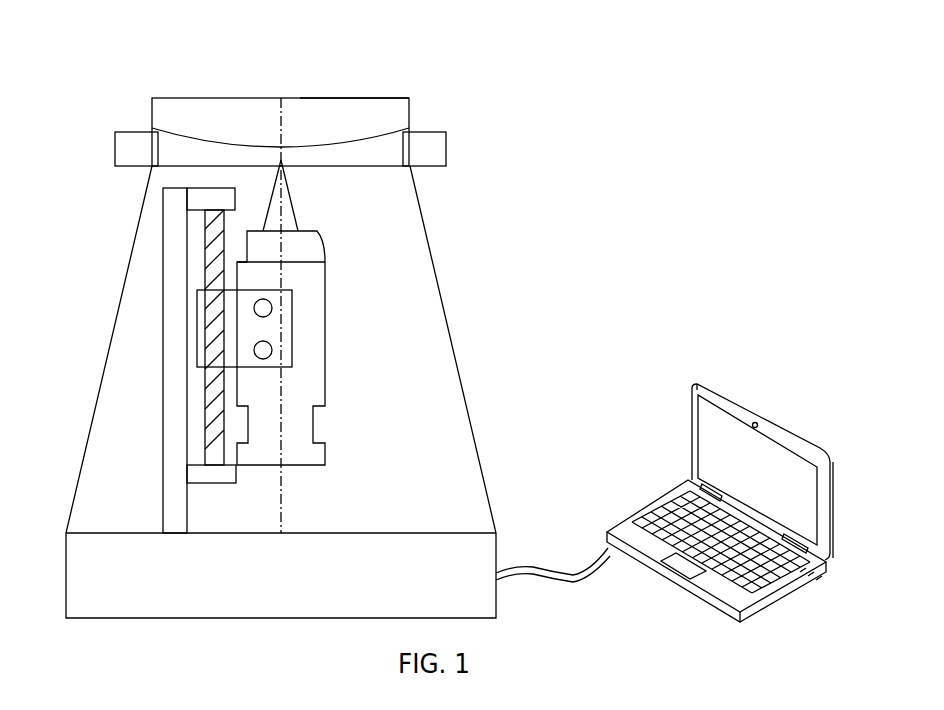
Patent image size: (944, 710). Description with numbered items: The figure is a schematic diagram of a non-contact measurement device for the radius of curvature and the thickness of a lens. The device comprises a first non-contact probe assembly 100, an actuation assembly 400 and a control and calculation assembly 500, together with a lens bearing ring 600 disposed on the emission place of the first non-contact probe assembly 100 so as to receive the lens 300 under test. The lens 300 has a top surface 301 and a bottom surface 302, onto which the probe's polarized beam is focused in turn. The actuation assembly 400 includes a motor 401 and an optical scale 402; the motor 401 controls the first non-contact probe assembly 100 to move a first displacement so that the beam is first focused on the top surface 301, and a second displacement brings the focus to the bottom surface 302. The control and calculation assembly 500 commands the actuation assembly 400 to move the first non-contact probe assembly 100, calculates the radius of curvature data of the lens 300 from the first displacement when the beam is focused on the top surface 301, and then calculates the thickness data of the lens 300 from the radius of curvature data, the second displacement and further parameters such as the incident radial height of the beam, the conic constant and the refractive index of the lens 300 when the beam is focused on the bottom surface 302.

The first non-contact probe assembly 100 is at (268, 262).
The lens under test 300 is at (250, 110).
The top surface 301 is at (192, 140).
The bottom surface 302 is at (340, 98).
The actuation assembly 400 is at (172, 382).
The motor 401 is at (268, 329).
The optical scale 402 is at (419, 344).
The control and calculation assembly 500 is at (485, 562).
The lens bearing ring 600 is at (125, 148).